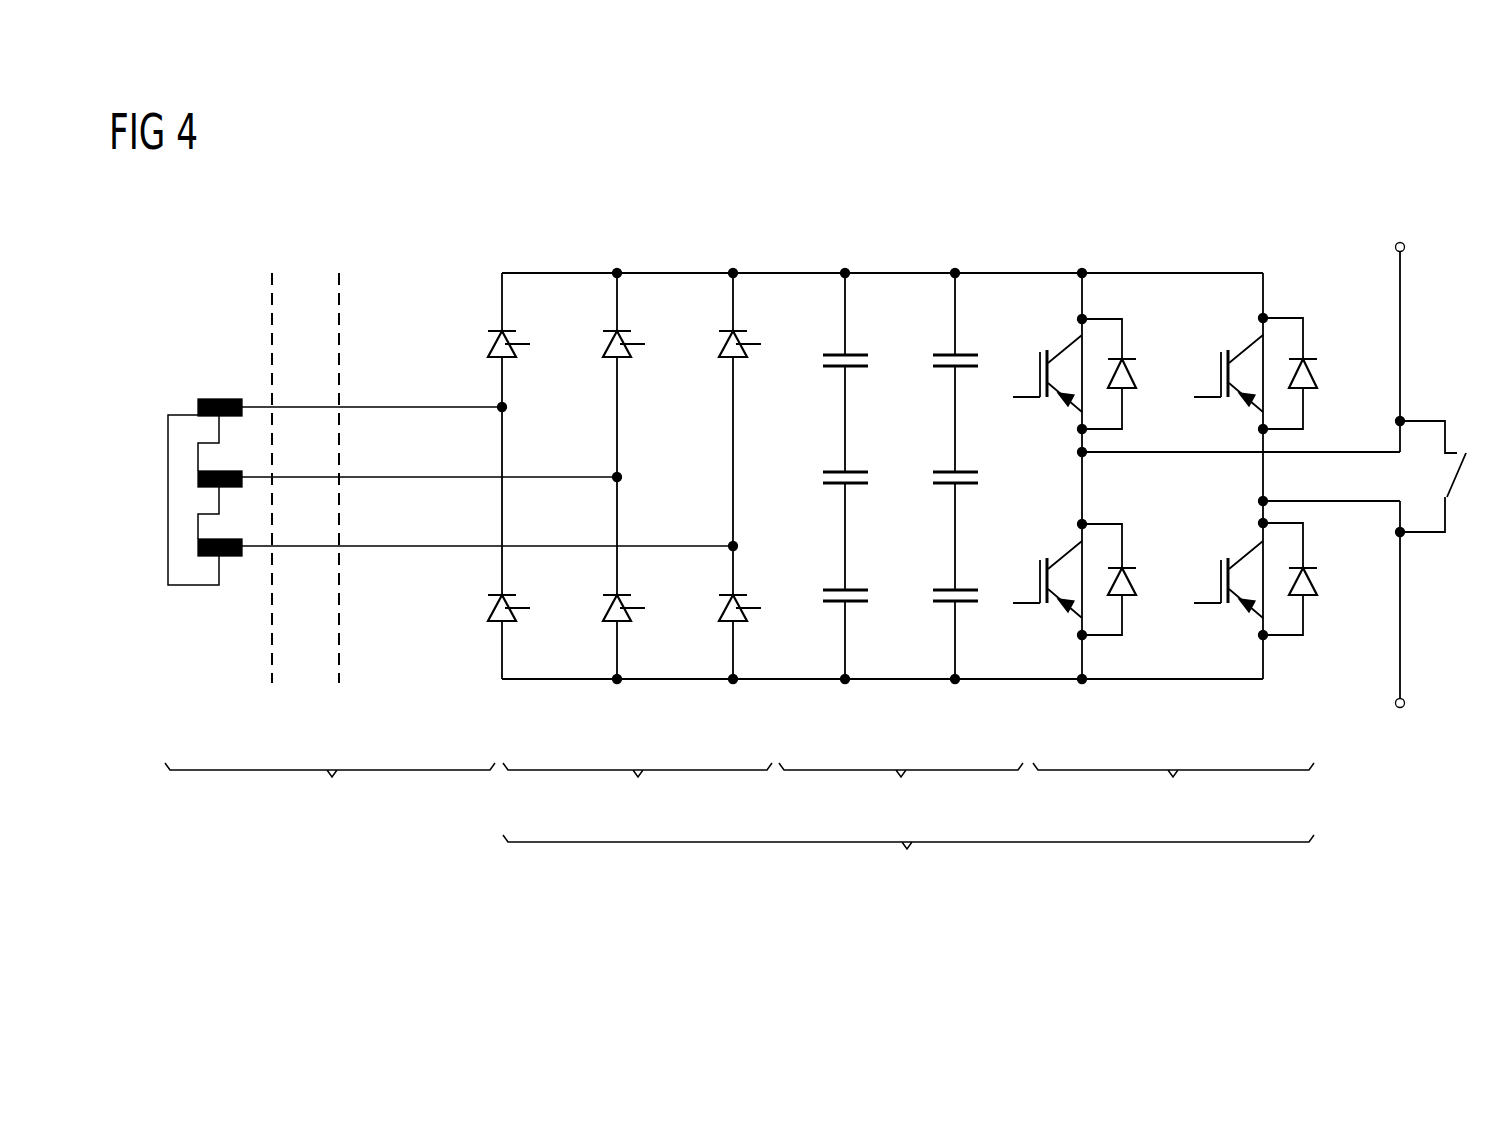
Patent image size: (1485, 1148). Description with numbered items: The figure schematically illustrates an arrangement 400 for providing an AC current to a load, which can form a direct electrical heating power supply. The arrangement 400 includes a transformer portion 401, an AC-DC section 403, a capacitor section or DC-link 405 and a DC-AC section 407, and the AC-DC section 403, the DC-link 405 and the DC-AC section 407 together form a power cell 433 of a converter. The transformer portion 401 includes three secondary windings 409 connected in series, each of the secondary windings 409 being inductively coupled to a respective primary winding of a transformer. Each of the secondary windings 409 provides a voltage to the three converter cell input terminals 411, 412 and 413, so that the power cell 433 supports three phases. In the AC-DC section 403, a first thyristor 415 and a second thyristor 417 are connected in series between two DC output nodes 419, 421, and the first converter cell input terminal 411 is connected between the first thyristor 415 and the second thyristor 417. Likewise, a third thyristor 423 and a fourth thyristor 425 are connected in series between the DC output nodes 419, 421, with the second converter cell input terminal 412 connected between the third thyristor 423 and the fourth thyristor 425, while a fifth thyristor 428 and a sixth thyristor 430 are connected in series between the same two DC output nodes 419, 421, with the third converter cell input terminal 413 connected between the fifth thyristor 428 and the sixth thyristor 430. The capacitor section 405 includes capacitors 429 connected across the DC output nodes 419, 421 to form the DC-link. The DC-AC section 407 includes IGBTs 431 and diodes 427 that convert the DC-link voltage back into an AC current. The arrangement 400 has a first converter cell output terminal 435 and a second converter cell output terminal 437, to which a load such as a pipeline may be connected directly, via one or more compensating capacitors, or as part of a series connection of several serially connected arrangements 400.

The arrangement 400 is at (1150, 200).
The transformer portion 401 is at (330, 792).
The AC-DC section 403 is at (637, 547).
The capacitor section 405 is at (901, 792).
The DC-AC section 407 is at (1216, 547).
The secondary winding 409 is at (220, 398).
The first converter cell input terminal 411 is at (498, 403).
The second converter cell input terminal 412 is at (614, 473).
The third converter cell input terminal 413 is at (730, 541).
The first thyristor 415 is at (487, 338).
The second thyristor 417 is at (487, 604).
The DC output node 419 is at (845, 269).
The DC output node 421 is at (845, 683).
The third thyristor 423 is at (603, 340).
The fourth thyristor 425 is at (603, 604).
The diode 427 is at (1136, 370).
The fifth thyristor 428 is at (720, 340).
The capacitor 429 is at (868, 366).
The sixth thyristor 430 is at (720, 604).
The IGBT 431 is at (1045, 350).
The power cell 433 is at (908, 866).
The first converter cell output terminal 435 is at (1395, 247).
The second converter cell output terminal 437 is at (1395, 703).